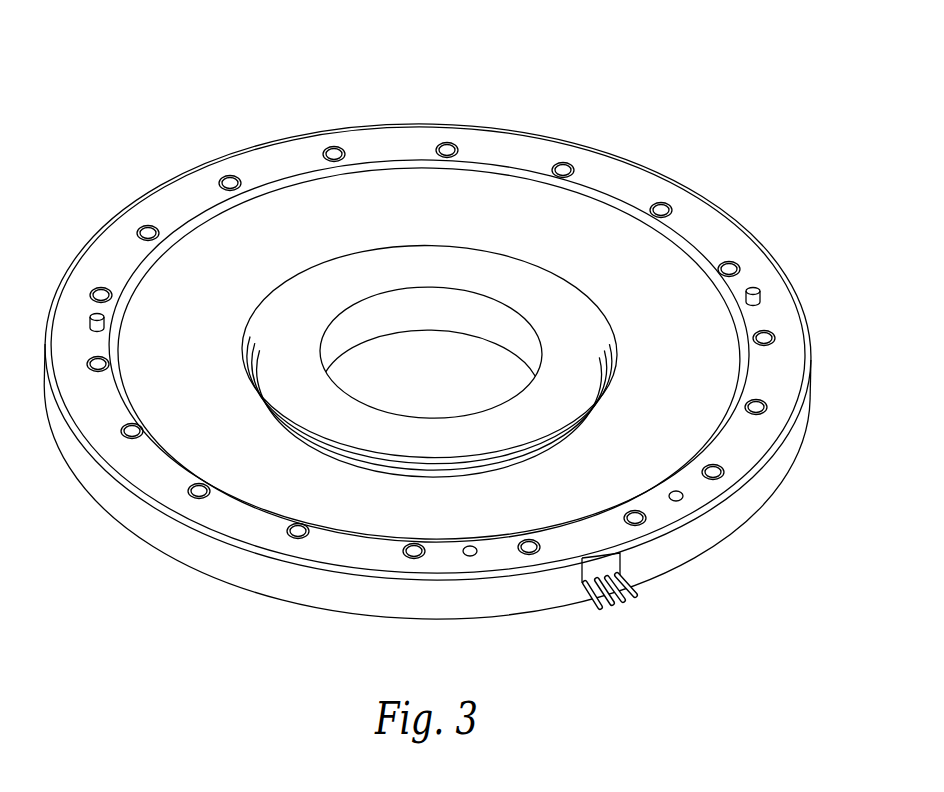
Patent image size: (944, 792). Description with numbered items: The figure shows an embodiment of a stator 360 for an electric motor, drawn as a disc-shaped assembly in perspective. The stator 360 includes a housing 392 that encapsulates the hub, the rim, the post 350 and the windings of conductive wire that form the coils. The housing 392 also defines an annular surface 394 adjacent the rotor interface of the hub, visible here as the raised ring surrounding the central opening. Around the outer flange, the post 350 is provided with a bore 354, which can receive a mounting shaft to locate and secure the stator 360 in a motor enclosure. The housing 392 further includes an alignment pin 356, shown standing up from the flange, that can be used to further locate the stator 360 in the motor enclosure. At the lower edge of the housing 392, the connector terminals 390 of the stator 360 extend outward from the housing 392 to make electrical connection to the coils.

The stator 360 is at (252, 77).
The post 350 is at (572, 171).
The bore 354 is at (561, 163).
The alignment pin 356 is at (750, 289).
The connector terminals 390 is at (619, 626).
The housing 392 is at (798, 331).
The annular surface 394 is at (381, 313).